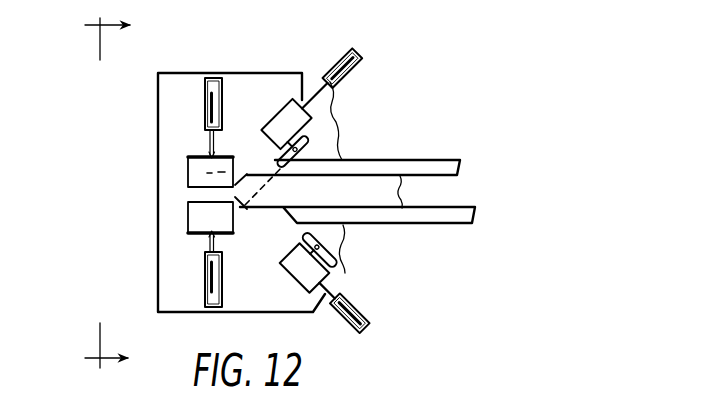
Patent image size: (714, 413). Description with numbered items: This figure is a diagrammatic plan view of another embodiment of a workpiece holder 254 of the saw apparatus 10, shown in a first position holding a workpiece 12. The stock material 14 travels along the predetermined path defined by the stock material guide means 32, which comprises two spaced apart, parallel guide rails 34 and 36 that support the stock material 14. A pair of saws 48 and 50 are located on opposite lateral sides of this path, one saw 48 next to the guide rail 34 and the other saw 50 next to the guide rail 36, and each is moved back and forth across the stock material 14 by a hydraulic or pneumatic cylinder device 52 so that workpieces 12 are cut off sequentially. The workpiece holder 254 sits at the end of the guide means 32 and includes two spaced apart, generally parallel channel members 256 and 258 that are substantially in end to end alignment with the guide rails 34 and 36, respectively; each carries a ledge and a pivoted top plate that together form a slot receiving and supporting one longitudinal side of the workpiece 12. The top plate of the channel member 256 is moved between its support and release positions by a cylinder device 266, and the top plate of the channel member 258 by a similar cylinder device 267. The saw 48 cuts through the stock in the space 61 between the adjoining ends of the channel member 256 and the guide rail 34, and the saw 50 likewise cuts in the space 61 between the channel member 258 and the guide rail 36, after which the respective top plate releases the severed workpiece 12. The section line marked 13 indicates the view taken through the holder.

The saw apparatus 10 is at (319, 44).
The workpiece 12 is at (188, 198).
The section line 13- 13 is at (103, 192).
The stock of material 14 is at (368, 192).
The stock material guide means 32 is at (447, 187).
The guide rail 34 is at (413, 163).
The guide rail 36 is at (382, 218).
The saw 48 is at (292, 122).
The saw 50 is at (315, 273).
The hydraulic or pneumatic cylinder device 52 is at (345, 82).
The space 61 is at (270, 162).
The workpiece holder 254 is at (147, 218).
The channel member 256 is at (188, 160).
The channel member 258 is at (207, 215).
The hydraulic or pneumatic cylinder device 266 is at (222, 97).
The hydraulic or pneumatic cylinder device 267 is at (223, 287).